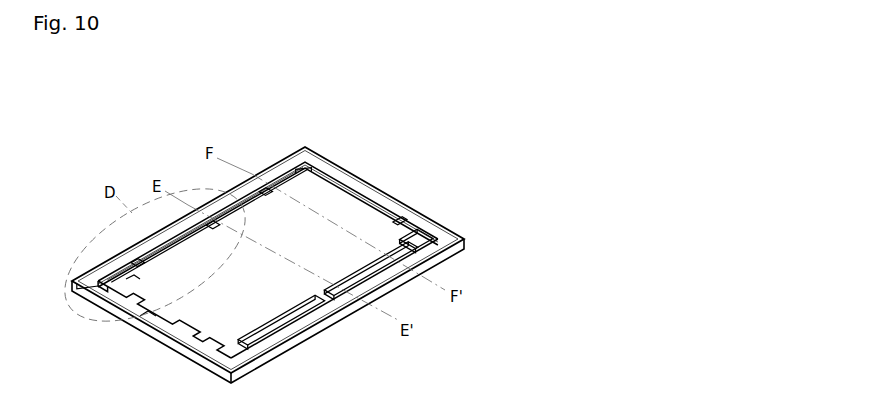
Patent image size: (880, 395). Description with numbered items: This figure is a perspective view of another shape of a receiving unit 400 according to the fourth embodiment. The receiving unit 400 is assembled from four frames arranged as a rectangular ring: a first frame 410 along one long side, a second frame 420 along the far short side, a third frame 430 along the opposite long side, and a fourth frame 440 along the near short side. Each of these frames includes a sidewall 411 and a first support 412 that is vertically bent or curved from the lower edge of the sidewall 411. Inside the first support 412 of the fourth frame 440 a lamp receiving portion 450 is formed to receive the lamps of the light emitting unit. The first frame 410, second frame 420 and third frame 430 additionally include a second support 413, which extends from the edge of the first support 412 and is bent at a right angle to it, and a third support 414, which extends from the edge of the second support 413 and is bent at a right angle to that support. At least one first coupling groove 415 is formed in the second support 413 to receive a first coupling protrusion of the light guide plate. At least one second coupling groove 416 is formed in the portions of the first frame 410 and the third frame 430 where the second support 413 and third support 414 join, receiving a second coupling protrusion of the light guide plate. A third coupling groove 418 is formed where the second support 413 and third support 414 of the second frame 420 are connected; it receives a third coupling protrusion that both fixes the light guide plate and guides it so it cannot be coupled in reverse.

The receiving unit 400 is at (269, 223).
The first frame 410 is at (268, 204).
The sidewall 411 is at (80, 258).
The first support 412 is at (70, 271).
The second support 413 is at (159, 274).
The third support 414 is at (152, 291).
The first coupling groove 415 is at (228, 247).
The second coupling groove 416 is at (217, 243).
The third coupling groove 418 is at (413, 213).
The second frame 420 is at (268, 252).
The third frame 430 is at (328, 305).
The fourth frame 440 is at (164, 335).
The lamp receiving portion 450 is at (176, 320).